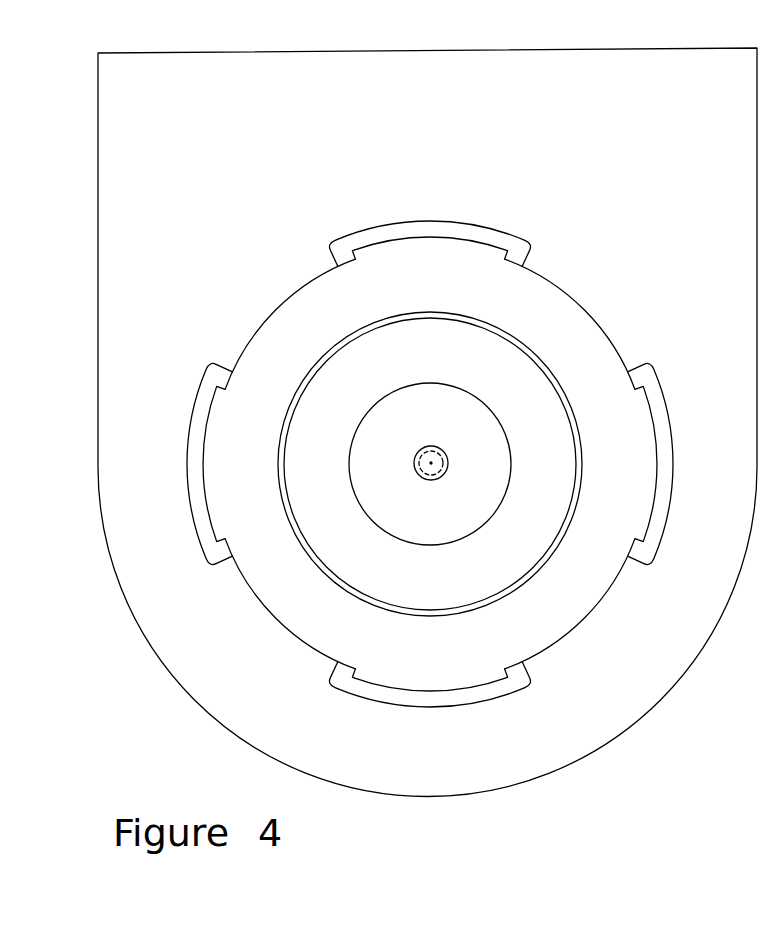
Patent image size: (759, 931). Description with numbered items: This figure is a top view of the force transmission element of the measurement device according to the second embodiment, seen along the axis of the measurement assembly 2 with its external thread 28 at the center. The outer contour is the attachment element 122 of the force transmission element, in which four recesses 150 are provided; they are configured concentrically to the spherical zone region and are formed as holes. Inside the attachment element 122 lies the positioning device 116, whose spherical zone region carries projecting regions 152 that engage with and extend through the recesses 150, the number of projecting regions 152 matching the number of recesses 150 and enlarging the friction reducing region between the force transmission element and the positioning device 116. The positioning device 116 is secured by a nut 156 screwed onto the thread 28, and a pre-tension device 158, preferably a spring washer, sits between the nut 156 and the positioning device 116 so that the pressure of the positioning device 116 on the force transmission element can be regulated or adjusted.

The apparatus 2 is at (70, 95).
The external thread 28 is at (414, 457).
The positioning device 116 is at (308, 315).
The attachment element 122 is at (98, 334).
The recesses 150 is at (343, 242).
The projecting regions 152 is at (417, 238).
The nut 156 is at (463, 513).
The pre-tension device 158 is at (530, 377).